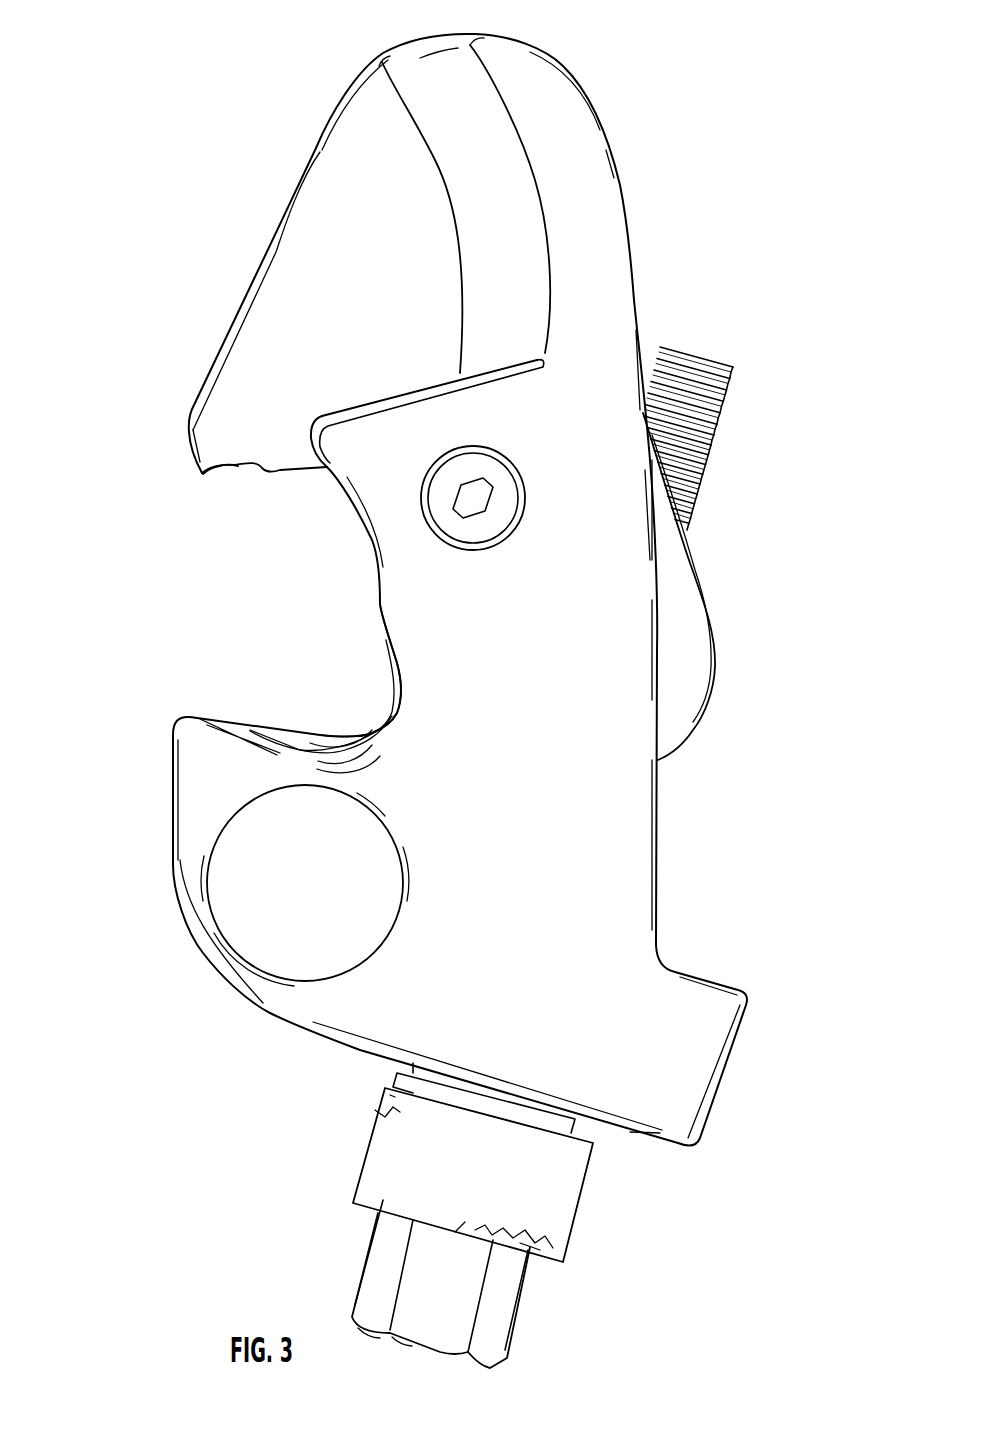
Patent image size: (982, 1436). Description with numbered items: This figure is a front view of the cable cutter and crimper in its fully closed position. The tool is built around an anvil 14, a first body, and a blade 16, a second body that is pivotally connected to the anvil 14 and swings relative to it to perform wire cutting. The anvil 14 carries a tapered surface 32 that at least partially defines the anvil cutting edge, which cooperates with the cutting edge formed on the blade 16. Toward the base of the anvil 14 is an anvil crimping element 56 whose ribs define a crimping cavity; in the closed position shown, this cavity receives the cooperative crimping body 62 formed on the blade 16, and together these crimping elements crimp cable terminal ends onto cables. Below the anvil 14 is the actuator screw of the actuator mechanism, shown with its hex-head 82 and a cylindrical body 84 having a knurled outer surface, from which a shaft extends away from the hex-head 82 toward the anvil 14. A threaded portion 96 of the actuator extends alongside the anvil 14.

The anvil 14 is at (675, 857).
The blade 16 is at (252, 247).
The tapered surface 32 is at (463, 100).
The anvil crimping element 56 is at (344, 721).
The crimping body 62 is at (236, 468).
The hex-head 82 is at (502, 1322).
The cylindrical body 84 is at (557, 1203).
The threaded rod 96 is at (700, 350).